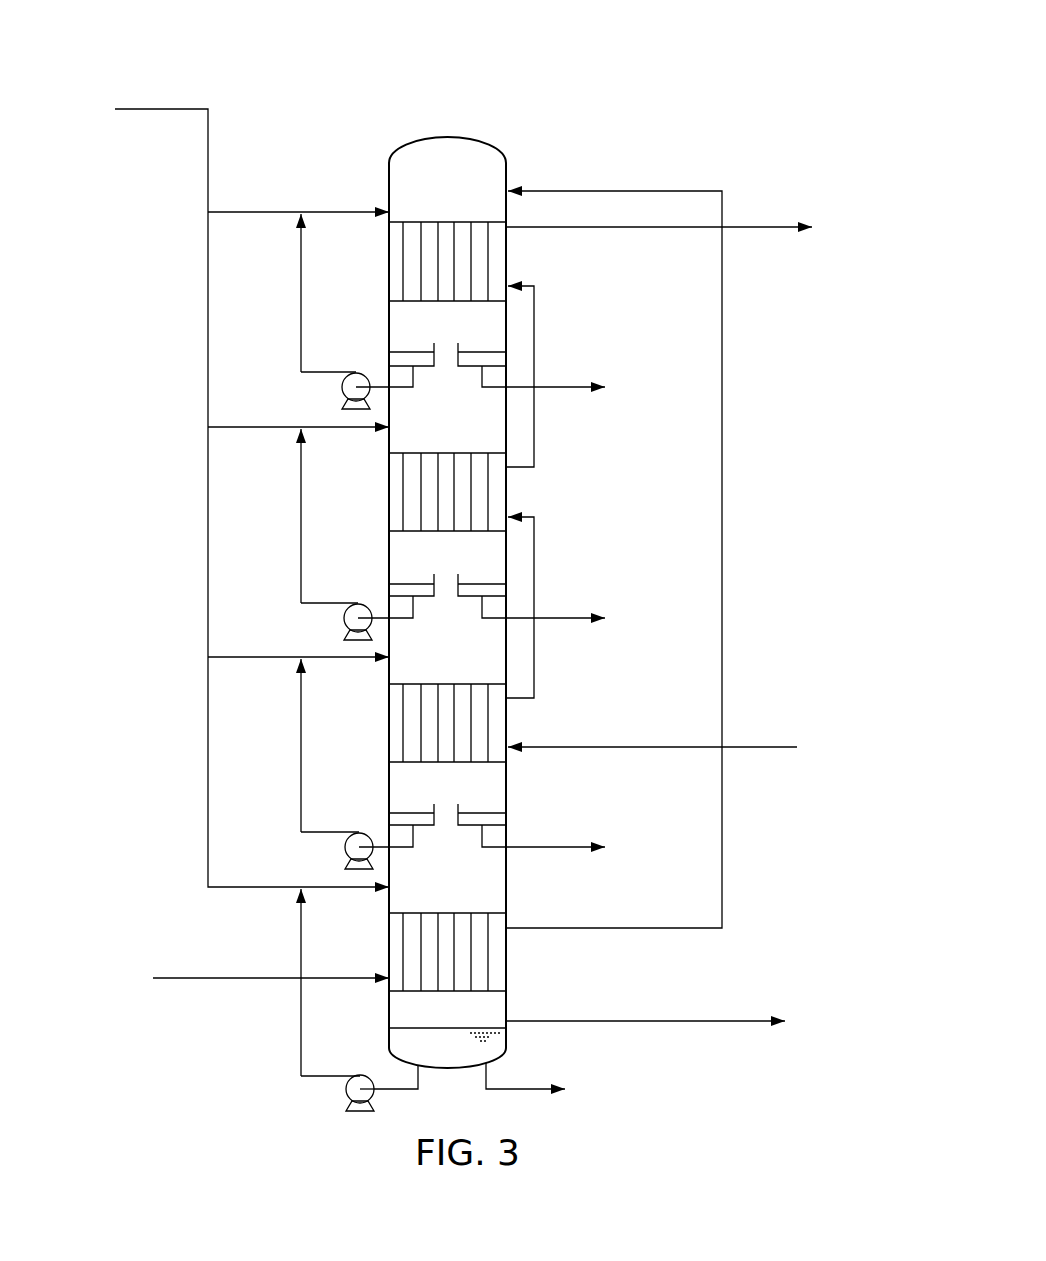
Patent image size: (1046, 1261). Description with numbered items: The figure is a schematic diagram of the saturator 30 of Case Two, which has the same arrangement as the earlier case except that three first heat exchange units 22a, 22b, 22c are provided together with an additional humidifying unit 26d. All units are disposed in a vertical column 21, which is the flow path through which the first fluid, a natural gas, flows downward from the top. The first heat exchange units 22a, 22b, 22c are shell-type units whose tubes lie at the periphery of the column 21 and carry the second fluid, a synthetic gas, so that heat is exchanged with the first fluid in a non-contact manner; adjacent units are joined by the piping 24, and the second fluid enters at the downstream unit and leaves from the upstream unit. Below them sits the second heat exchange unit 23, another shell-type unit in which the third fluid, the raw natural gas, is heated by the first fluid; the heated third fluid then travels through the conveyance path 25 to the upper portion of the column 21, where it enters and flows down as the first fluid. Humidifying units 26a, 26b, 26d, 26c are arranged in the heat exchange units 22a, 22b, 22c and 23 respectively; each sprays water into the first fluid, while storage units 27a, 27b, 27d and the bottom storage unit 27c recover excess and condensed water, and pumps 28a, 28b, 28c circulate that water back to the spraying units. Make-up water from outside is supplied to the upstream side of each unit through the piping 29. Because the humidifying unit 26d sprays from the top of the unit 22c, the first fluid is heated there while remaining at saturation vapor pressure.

The column 21 is at (485, 141).
The first heat exchange unit 22a is at (507, 258).
The first heat exchange unit 22b is at (507, 483).
The first heat exchange unit 22c is at (507, 720).
The second heat exchange unit 23 is at (507, 953).
The piping 24 is at (535, 415).
The conveyance path 25 is at (723, 447).
The humidifying unit 26a is at (288, 290).
The humidifying unit 26b is at (286, 522).
The humidifying unit 26c is at (288, 963).
The humidifying unit 26d is at (288, 750).
The storage unit 27a is at (398, 350).
The storage unit 27b is at (398, 590).
The storage unit 27c is at (408, 1046).
The storage unit 27d is at (405, 818).
The pump 28a is at (341, 386).
The pump 28b is at (344, 616).
The pump 28c is at (345, 847).
The piping 29 is at (155, 108).
The saturator 30 is at (444, 80).